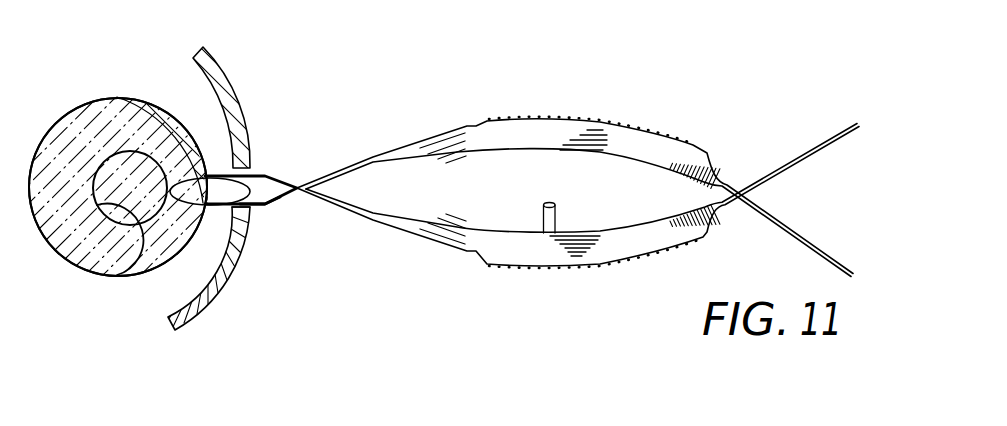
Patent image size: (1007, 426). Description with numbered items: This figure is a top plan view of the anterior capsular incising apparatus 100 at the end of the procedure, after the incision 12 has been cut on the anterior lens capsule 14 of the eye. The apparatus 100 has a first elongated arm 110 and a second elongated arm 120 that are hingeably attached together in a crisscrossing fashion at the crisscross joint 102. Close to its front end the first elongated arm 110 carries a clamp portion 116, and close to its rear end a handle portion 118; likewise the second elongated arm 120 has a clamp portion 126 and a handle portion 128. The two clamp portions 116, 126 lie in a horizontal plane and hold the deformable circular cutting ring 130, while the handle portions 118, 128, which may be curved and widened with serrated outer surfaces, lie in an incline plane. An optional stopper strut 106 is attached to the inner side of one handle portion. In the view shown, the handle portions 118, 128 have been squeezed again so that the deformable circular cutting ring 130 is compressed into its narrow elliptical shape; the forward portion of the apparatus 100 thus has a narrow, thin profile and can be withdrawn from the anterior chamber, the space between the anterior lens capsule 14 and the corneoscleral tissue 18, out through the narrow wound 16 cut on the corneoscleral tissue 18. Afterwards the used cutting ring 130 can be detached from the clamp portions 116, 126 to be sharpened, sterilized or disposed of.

The anterior capsular incision 12 is at (112, 267).
The anterior lens capsule 14 is at (47, 232).
The corneoscleral wound 16 is at (250, 208).
The corneoscleral tissue 18 is at (192, 58).
The anterior capsular incising apparatus 100 is at (532, 318).
The crisscross joint 102 is at (294, 187).
The stopper strut 106 is at (541, 217).
The first elongated arm 110 is at (458, 283).
The clamp portion 116 is at (265, 173).
The handle portion 118 is at (627, 240).
The second elongated arm 120 is at (458, 95).
The clamp portion 126 is at (257, 213).
The handle portion 128 is at (645, 152).
The deformable circular cutting ring 130 is at (117, 98).